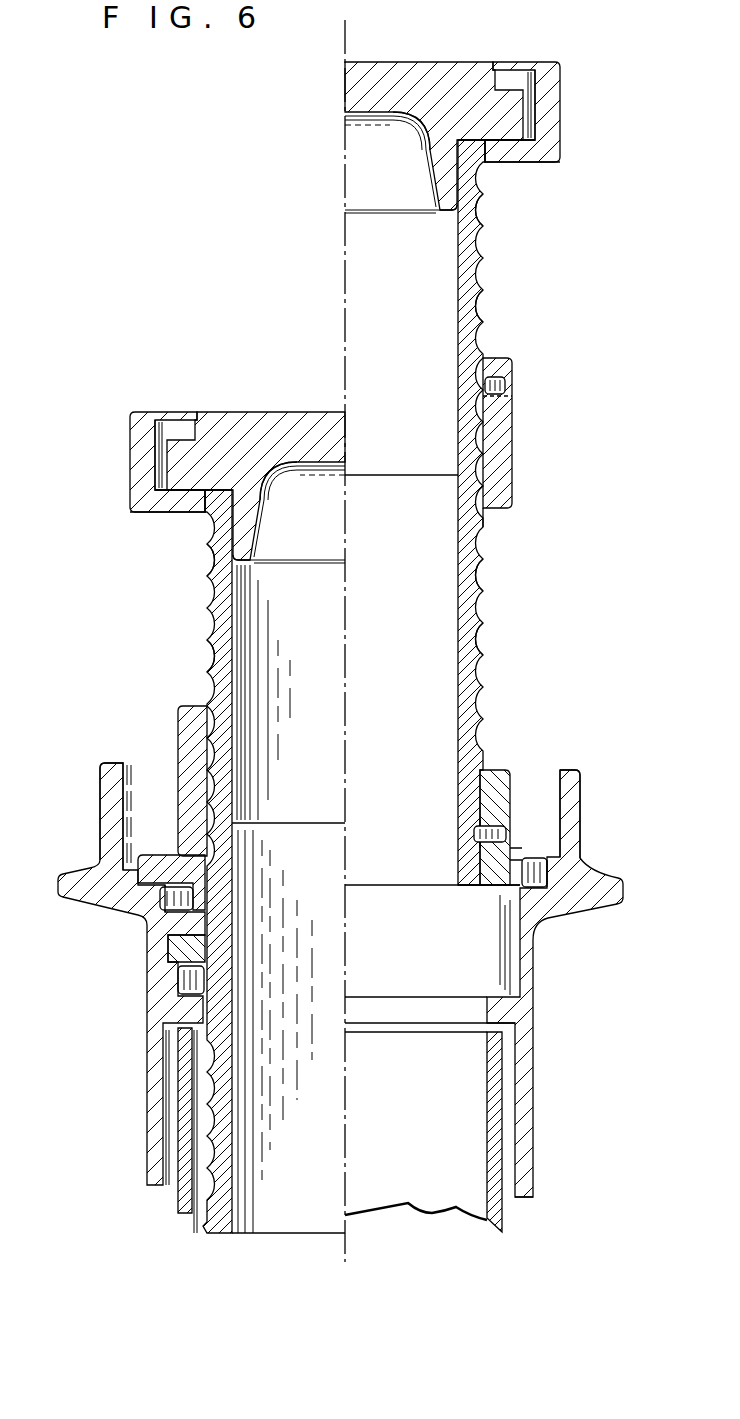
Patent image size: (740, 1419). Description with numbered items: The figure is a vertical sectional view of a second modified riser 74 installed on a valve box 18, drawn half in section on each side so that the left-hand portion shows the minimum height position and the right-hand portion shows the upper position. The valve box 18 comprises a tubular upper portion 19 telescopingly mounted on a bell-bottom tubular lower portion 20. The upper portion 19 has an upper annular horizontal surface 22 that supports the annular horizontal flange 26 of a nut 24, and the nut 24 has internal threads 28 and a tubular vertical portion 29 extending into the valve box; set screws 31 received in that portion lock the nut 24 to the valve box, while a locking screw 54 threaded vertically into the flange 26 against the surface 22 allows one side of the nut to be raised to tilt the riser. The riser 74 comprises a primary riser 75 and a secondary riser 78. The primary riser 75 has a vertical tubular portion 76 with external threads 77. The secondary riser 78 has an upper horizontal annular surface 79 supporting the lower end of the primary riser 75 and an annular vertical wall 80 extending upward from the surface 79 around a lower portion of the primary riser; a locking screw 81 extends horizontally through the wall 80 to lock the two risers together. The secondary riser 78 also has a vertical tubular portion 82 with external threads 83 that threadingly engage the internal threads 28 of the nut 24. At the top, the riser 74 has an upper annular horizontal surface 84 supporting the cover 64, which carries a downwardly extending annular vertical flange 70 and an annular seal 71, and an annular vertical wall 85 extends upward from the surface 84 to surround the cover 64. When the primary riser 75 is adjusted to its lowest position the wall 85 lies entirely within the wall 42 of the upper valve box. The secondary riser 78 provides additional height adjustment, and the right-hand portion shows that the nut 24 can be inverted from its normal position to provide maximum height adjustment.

The valve box 18 is at (550, 1077).
The tubular upper portion 19 is at (529, 967).
The bell-bottom tubular lower portion 20 is at (503, 1213).
The upper annular horizontal surface 22 is at (549, 880).
The nut 24 is at (506, 842).
The annular horizontal flange 26 is at (512, 860).
The internal threads 28 is at (477, 884).
The tubular vertical portion 29 is at (493, 780).
The set screws 31 is at (494, 827).
The annular vertical wall 42 is at (572, 813).
The locking screw 54 is at (543, 866).
The cover 64 is at (430, 78).
The annular vertical flange 70 is at (440, 162).
The annular seal 71 is at (452, 214).
The riser 74 is at (510, 230).
The primary riser 75 is at (525, 162).
The vertical tubular portion 76 is at (474, 245).
The external threads 77 is at (483, 300).
The secondary riser 78 is at (488, 520).
The upper horizontal annular surface 79 is at (467, 470).
The annular vertical wall 80 is at (498, 450).
The locking screw 81 is at (510, 385).
The vertical tubular portion 82 is at (468, 572).
The external threads 83 is at (481, 648).
The upper annular horizontal surface 84 is at (530, 133).
The annular vertical wall 85 is at (560, 88).